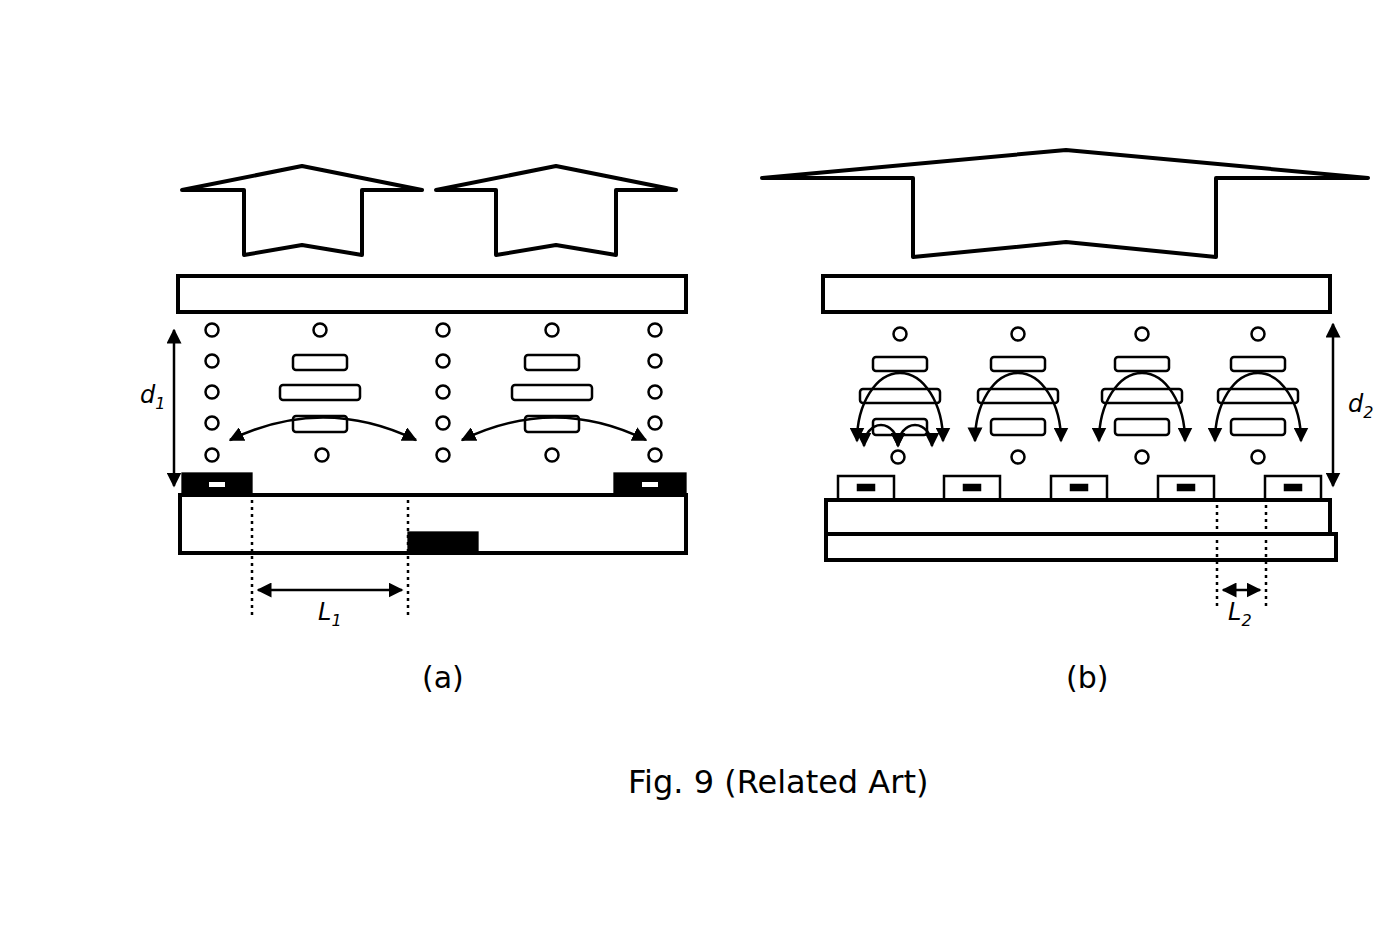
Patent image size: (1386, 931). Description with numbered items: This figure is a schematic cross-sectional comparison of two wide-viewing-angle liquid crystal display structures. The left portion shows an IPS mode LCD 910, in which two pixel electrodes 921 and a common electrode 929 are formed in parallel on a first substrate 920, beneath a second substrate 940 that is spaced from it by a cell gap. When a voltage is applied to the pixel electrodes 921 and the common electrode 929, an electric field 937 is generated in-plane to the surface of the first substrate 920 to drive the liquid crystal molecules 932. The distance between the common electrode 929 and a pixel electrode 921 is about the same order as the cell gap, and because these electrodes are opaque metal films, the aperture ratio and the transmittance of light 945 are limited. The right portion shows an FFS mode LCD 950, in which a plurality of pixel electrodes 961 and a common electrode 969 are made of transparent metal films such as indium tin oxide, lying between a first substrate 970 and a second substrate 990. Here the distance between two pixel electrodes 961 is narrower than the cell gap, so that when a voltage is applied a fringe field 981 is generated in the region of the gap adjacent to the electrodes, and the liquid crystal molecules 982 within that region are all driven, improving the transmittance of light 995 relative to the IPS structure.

The IPS mode LCD 910 is at (462, 110).
The first substrate 920 is at (626, 545).
The pixel electrodes 921 is at (200, 478).
The common electrode 929 is at (478, 560).
The liquid crystal molecules 932 is at (302, 360).
The electric field 937 is at (608, 417).
The second substrate 940 is at (663, 294).
The light 945 is at (585, 192).
The FFS mode LCD 950 is at (1119, 67).
The pixel electrodes 961 is at (880, 490).
The common electrode 969 is at (978, 548).
The first substrate 970 is at (1305, 552).
The fringe field 981 is at (864, 430).
The liquid crystal molecules 982 is at (893, 362).
The second substrate 990 is at (1303, 292).
The light 995 is at (1160, 180).